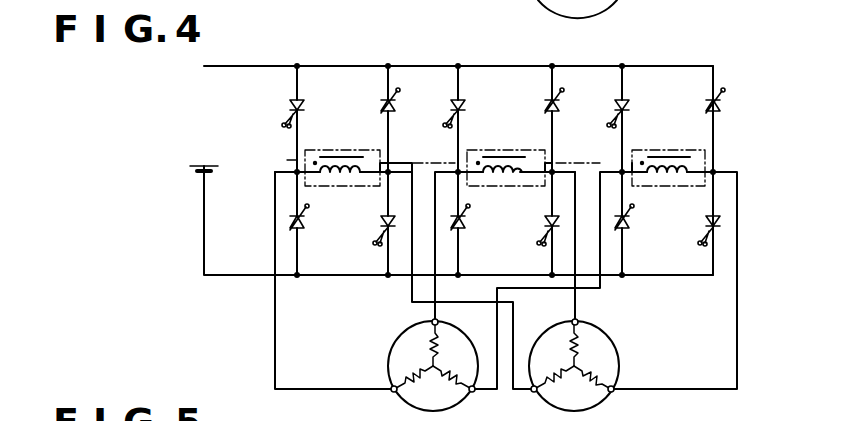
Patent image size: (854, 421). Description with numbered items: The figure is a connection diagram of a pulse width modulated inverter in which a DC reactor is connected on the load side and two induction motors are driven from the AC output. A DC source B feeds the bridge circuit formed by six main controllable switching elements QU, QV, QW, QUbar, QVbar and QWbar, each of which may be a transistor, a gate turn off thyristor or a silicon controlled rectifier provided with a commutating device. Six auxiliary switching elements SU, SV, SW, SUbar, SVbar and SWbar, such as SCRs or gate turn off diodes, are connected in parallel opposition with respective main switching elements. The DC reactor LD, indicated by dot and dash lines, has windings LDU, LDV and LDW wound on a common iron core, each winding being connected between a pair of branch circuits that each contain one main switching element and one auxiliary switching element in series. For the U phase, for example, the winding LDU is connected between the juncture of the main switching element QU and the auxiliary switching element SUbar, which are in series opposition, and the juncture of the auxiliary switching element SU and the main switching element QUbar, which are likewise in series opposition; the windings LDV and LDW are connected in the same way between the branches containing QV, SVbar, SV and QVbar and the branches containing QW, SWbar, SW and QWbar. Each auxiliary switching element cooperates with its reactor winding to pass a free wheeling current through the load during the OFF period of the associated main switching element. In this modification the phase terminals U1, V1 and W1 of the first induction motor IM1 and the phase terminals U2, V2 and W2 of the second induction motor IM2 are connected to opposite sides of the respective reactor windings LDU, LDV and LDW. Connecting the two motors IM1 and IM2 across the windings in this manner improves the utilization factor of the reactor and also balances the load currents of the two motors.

The battery B is at (211, 183).
The DC reactor LD is at (287, 160).
The reactor winding LDU is at (353, 160).
The reactor winding LDV is at (518, 160).
The reactor winding LDW is at (678, 158).
The main controllable switching element QU is at (291, 108).
The main controllable switching element QV is at (454, 106).
The main controllable switching element QW is at (618, 106).
The auxiliary switching element SU is at (397, 103).
The auxiliary switching element SV is at (560, 104).
The auxiliary switching element SW is at (720, 105).
The main controllable switching element QUbar is at (380, 219).
The main controllable switching element QVbar is at (543, 222).
The main controllable switching element QWbar is at (705, 222).
The auxiliary switching element SUbar is at (305, 220).
The auxiliary switching element SVbar is at (466, 220).
The auxiliary switching element SWbar is at (630, 222).
The induction motor IM1 is at (392, 342).
The induction motor IM2 is at (617, 343).
The phase terminal U1 is at (383, 403).
The phase terminal V1 is at (452, 313).
The phase terminal W1 is at (484, 403).
The phase terminal U2 is at (526, 403).
The phase terminal V2 is at (590, 313).
The phase terminal W2 is at (626, 403).